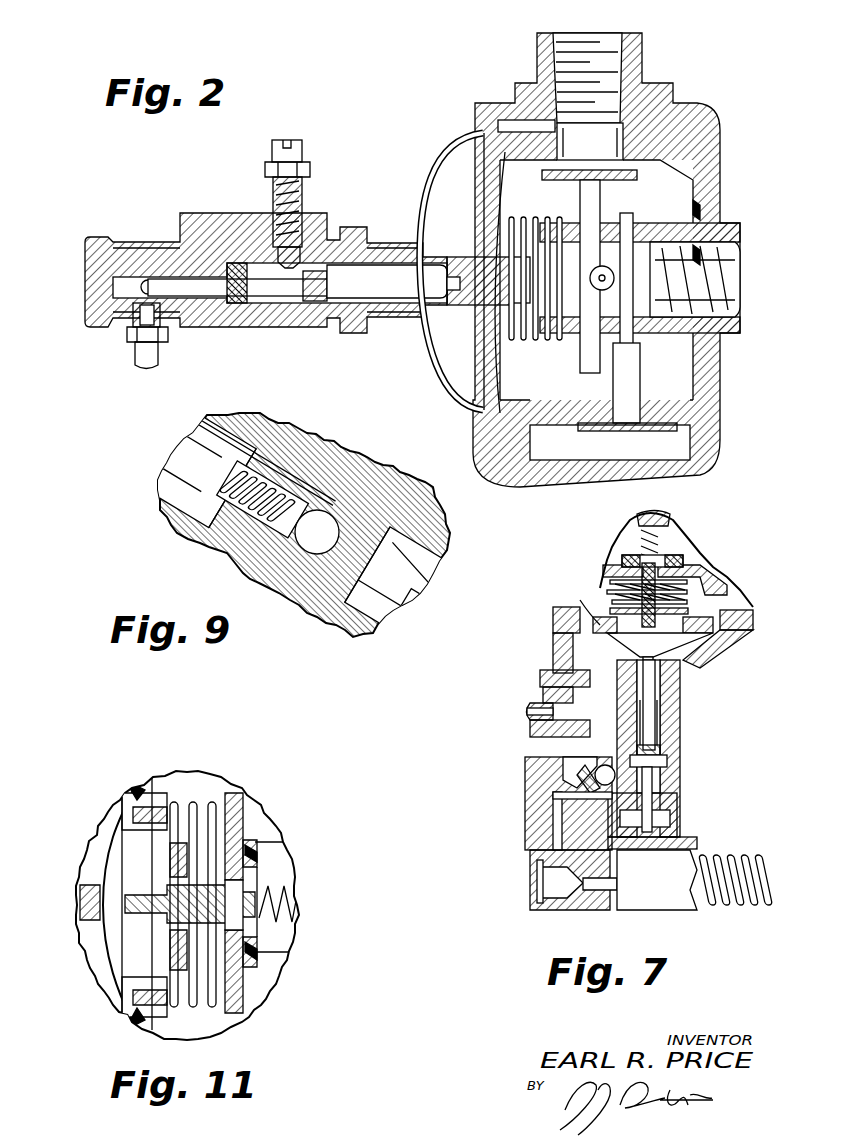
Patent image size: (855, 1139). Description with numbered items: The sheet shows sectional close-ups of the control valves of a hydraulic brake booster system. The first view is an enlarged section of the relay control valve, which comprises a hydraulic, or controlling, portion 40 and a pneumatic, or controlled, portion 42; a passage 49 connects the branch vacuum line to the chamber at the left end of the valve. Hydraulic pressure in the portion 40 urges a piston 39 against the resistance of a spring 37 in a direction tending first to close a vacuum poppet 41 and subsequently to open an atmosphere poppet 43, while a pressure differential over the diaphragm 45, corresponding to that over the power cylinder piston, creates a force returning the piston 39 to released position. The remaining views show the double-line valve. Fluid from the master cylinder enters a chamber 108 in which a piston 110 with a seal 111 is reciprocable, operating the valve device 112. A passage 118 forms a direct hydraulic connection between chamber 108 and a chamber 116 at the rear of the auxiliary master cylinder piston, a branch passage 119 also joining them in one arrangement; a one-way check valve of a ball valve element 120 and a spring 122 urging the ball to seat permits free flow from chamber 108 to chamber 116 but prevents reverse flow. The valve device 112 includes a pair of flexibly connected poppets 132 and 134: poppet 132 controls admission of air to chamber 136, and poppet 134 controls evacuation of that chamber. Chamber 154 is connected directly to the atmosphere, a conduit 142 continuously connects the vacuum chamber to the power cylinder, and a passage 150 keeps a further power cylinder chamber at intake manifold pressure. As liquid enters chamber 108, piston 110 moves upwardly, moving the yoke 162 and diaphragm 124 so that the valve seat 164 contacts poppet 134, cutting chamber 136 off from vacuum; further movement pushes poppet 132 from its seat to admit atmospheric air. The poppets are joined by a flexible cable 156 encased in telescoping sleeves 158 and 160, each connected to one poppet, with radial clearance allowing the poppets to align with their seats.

In FIG. 2, the hydraulic portion 40 is at (196, 212).
In FIG. 2, the piston 39 is at (352, 272).
In FIG. 2, the pneumatic portion 42 is at (486, 170).
In FIG. 2, the diaphragm 45 is at (433, 168).
In FIG. 2, the passage 49 is at (520, 123).
In FIG. 2, the vacuum poppet 41 is at (637, 172).
In FIG. 2, the spring 37 is at (530, 345).
In FIG. 2, the atmosphere poppet 43 is at (675, 425).
In FIG. 9, the branch passage 119 is at (187, 483).
In FIG. 9, the spring 122 is at (247, 517).
In FIG. 7, the spring 122 is at (593, 782).
In FIG. 9, the ball valve element 120 is at (310, 545).
In FIG. 7, the ball valve element 120 is at (612, 773).
In FIG. 7, the chamber 154 is at (672, 532).
In FIG. 7, the poppet 132 is at (683, 560).
In FIG. 11, the poppet 132 is at (247, 860).
In FIG. 7, the telescoping sleeve 158 is at (690, 570).
In FIG. 11, the telescoping sleeve 158 is at (230, 960).
In FIG. 7, the valve device 112 is at (687, 582).
In FIG. 7, the poppet 134 is at (693, 587).
In FIG. 11, the poppet 134 is at (177, 850).
In FIG. 7, the valve seat 164 is at (687, 603).
In FIG. 7, the diaphragm 124 is at (700, 617).
In FIG. 7, the yoke 162 is at (680, 640).
In FIG. 7, the chamber 136 is at (603, 582).
In FIG. 7, the flexible cable 156 is at (610, 590).
In FIG. 11, the flexible cable 156 is at (147, 910).
In FIG. 7, the telescoping sleeve 160 is at (613, 613).
In FIG. 11, the telescoping sleeve 160 is at (140, 897).
In FIG. 7, the conduit 142 is at (593, 647).
In FIG. 7, the passage 150 is at (545, 743).
In FIG. 7, the piston 110 is at (677, 707).
In FIG. 7, the seal 111 is at (680, 733).
In FIG. 7, the chamber 108 is at (660, 760).
In FIG. 7, the passage 118 is at (558, 807).
In FIG. 7, the chamber 116 is at (540, 853).